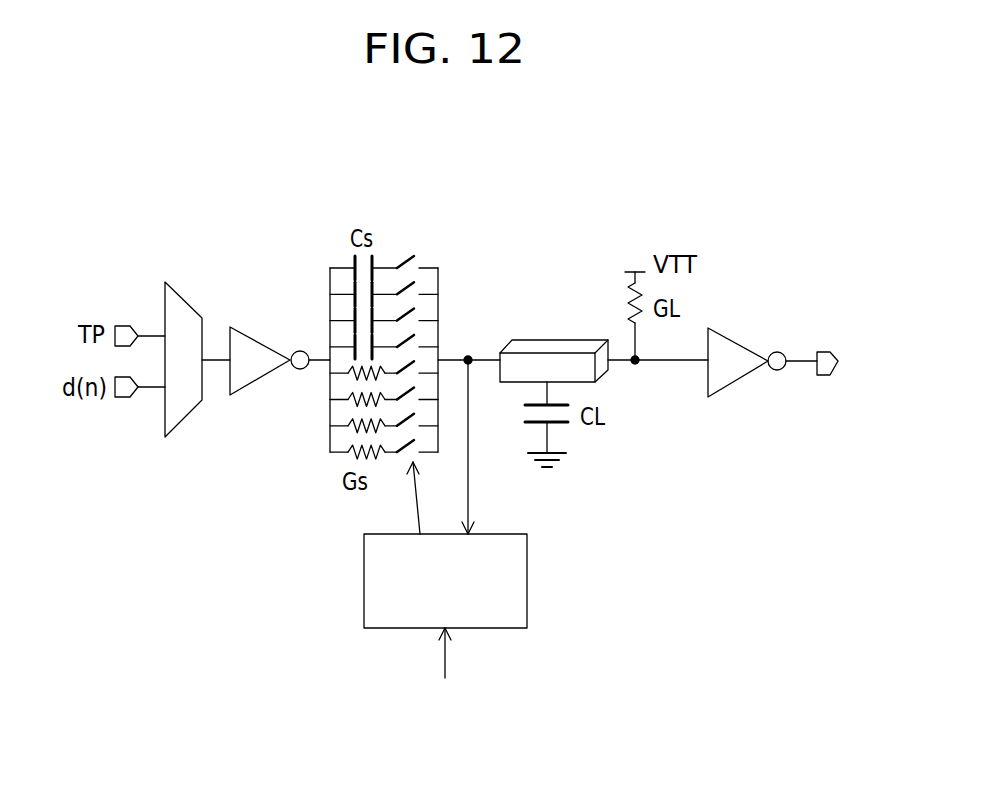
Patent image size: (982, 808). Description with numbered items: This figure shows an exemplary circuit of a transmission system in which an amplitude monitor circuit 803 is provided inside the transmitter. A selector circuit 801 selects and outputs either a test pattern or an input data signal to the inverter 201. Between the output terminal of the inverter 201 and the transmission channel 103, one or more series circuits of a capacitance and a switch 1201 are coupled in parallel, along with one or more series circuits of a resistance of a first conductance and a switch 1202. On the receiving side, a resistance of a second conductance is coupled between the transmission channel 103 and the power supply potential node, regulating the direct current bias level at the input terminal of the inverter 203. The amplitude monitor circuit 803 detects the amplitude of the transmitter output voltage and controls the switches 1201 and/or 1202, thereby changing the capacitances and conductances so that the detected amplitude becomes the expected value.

The selector circuit 801 is at (183, 438).
The inverter 201 is at (260, 336).
The switch 1201 is at (410, 258).
The switch 1202 is at (406, 455).
The transmission channel 103 is at (548, 340).
The inverter 203 is at (736, 340).
The amplitude monitor circuit 803 is at (527, 583).